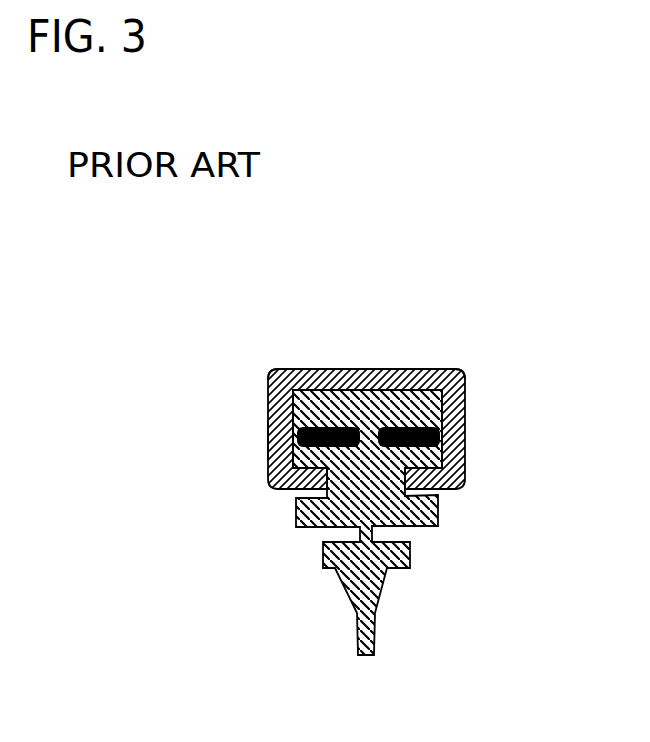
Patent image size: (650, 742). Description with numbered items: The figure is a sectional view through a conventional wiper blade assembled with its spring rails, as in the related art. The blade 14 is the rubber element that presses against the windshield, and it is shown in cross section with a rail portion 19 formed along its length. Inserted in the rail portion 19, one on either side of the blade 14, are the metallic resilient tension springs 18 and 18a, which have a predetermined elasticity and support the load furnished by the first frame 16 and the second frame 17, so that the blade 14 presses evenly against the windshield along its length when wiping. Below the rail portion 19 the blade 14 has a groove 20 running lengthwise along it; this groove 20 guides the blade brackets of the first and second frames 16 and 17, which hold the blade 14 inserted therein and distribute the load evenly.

The blade 14 is at (372, 440).
The first frame 16 is at (287, 370).
The second frame 17 is at (366, 374).
The tension spring 18 is at (440, 444).
The tension spring 18a is at (268, 438).
The rail portion 19 is at (285, 376).
The groove 20 is at (440, 492).